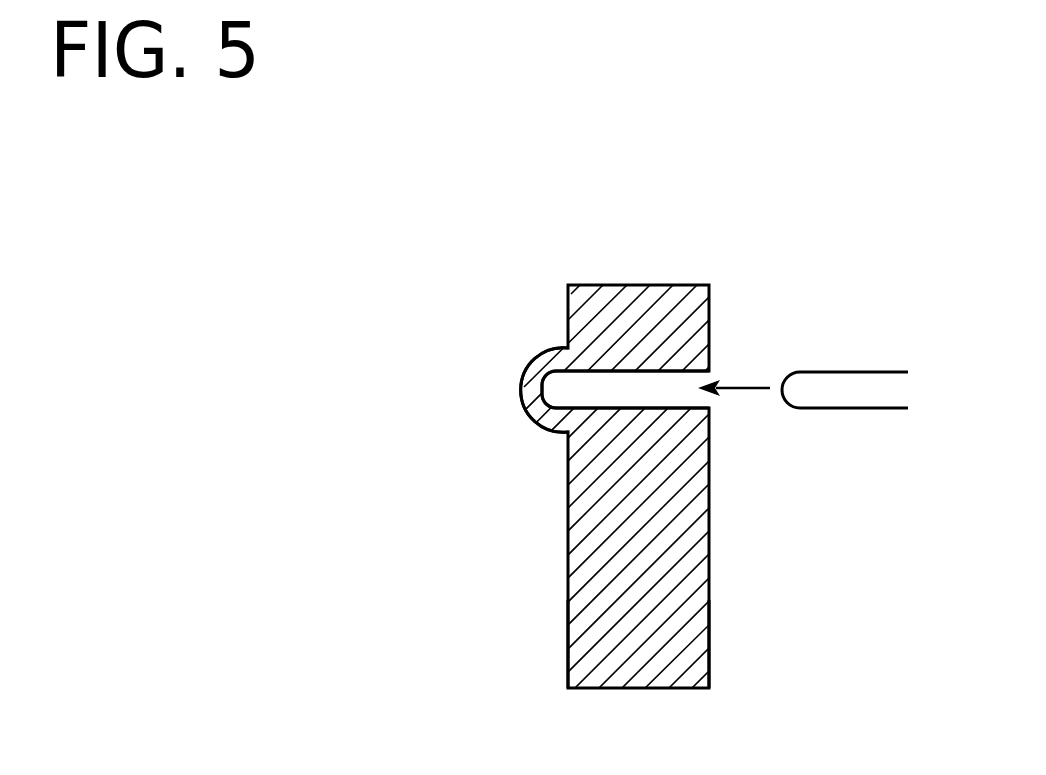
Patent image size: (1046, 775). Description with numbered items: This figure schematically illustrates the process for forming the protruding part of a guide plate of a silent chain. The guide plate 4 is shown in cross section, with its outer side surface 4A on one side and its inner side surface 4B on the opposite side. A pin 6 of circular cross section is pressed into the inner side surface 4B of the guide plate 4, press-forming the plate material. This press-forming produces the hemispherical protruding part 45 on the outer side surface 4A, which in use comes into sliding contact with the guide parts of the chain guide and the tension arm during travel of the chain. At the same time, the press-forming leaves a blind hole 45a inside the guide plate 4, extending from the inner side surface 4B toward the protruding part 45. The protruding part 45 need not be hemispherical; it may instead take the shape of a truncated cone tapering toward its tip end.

The guide plate 4 is at (710, 595).
The outer side surface 4A is at (567, 668).
The inner side surface 4B is at (712, 668).
The protruding part 45 is at (531, 363).
The blind hole 45a is at (680, 371).
The pin 6 is at (880, 393).